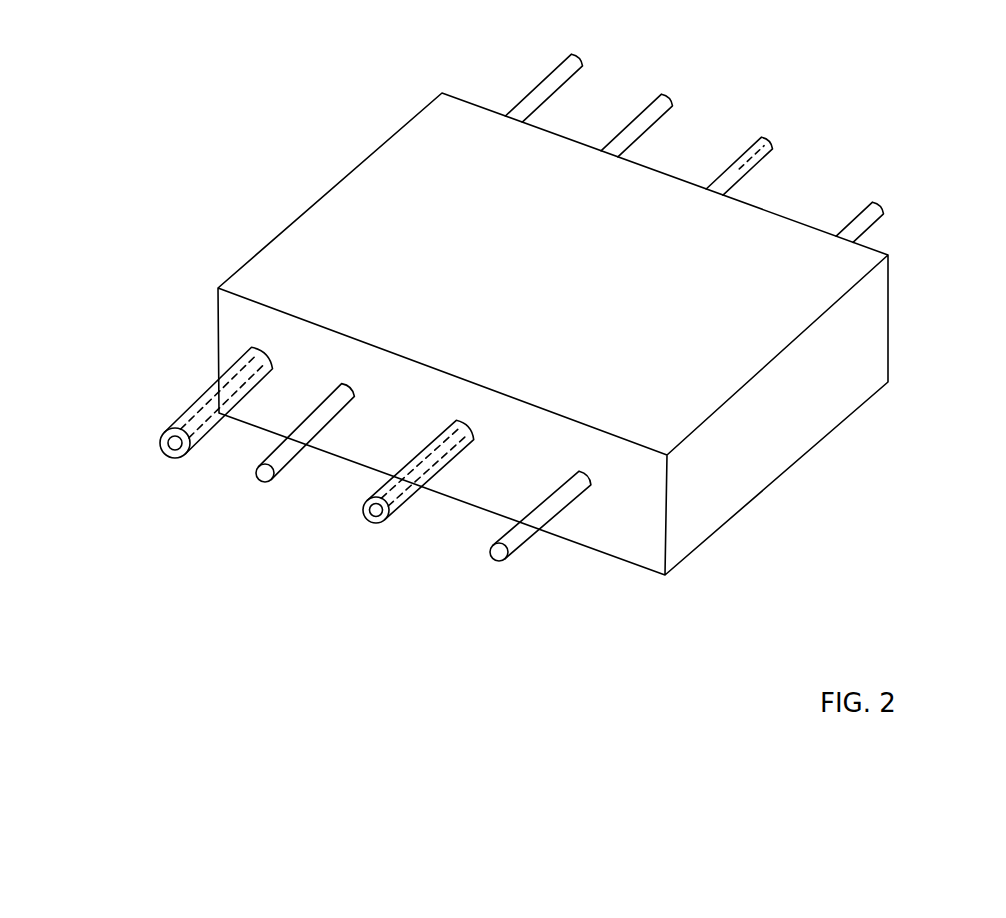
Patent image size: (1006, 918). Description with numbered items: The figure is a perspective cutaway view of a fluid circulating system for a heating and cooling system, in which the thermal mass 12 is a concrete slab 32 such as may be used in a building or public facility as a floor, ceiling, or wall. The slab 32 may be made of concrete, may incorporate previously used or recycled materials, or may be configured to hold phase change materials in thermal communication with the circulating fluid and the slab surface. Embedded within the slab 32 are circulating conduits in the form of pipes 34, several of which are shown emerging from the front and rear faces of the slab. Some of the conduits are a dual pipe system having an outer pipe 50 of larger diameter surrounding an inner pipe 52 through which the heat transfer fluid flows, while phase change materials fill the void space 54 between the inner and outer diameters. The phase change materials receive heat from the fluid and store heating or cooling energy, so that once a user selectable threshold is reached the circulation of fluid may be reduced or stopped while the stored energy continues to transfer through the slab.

The thermal mass 12 is at (335, 142).
The concrete slab 32 is at (832, 277).
The pipes 34 is at (527, 543).
The outer pipe 50 is at (382, 522).
The inner pipe 52 is at (369, 521).
The void space 54 is at (374, 521).